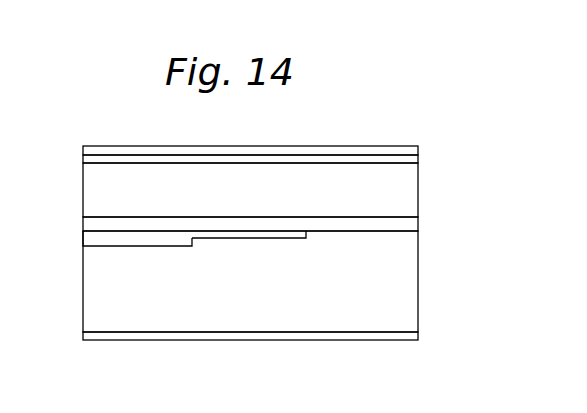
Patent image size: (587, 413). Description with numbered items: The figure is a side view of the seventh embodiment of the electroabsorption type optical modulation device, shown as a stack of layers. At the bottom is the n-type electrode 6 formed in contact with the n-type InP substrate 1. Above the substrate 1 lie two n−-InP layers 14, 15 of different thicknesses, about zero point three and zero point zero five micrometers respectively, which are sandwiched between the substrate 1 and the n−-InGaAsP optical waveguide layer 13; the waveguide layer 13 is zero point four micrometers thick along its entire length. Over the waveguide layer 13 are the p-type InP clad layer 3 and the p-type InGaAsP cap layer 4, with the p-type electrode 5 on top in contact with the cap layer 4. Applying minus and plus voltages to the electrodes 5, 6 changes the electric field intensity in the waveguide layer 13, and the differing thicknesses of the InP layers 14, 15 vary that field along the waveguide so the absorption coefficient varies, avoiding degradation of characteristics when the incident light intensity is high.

The p-type electrode 5 is at (424, 150).
The p-type InGaAsP cap layer 4 is at (420, 161).
The p-type InP clad layer 3 is at (421, 200).
The n−-InGaAsP optical waveguide layer 13 is at (423, 228).
The n−-InP layer 14 is at (78, 239).
The n−-InP layer 15 is at (261, 240).
The n-type InP substrate 1 is at (423, 299).
The n-type electrode 6 is at (269, 337).